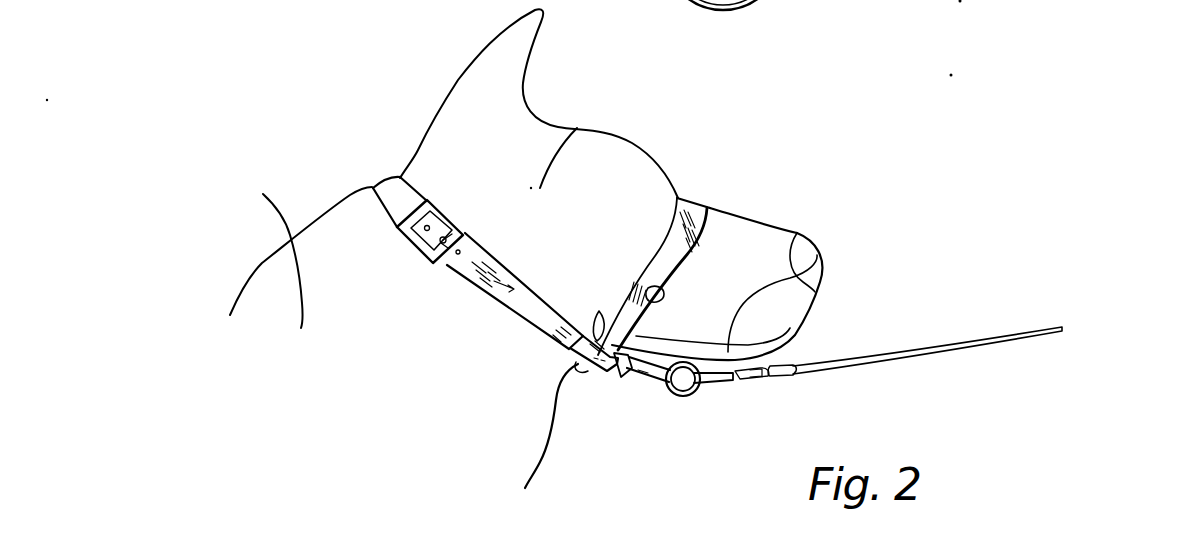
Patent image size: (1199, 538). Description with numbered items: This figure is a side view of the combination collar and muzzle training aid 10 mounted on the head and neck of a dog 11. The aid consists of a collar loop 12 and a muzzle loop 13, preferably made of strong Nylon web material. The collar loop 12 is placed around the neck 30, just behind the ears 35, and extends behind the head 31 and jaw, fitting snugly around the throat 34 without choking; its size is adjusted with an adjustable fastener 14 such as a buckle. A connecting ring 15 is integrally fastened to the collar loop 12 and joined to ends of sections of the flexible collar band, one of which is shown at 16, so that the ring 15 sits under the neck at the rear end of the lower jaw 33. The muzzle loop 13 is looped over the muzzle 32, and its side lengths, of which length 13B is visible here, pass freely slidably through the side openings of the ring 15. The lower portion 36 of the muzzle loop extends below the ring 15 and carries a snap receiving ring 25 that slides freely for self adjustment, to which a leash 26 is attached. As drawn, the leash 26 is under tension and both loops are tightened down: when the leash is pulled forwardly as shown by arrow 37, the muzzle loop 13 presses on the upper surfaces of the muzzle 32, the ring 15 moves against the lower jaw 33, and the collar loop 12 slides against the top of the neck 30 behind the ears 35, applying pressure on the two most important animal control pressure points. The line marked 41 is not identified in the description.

The combination collar and muzzle training aid 10 is at (559, 366).
The dog 11 is at (373, 163).
The collar loop 12 is at (512, 302).
The muzzle loop 13 is at (707, 131).
The side length of muzzle loop 13B is at (648, 289).
The adjustable fastener 14 is at (434, 206).
The connecting ring 15 is at (639, 378).
The end of collar band section 16 is at (605, 318).
The snap receiving ring 25 is at (688, 391).
The leash 26 is at (978, 337).
The neck 30 is at (372, 260).
The head 31 is at (570, 131).
The muzzle 32 is at (740, 223).
The lower jaw 33 is at (798, 271).
The throat 34 is at (519, 453).
The ears 35 is at (524, 33).
The lower portion of muzzle loop 36 is at (658, 384).
The arrow 37 is at (817, 347).
The strap edge reinforcement 41 is at (658, 272).